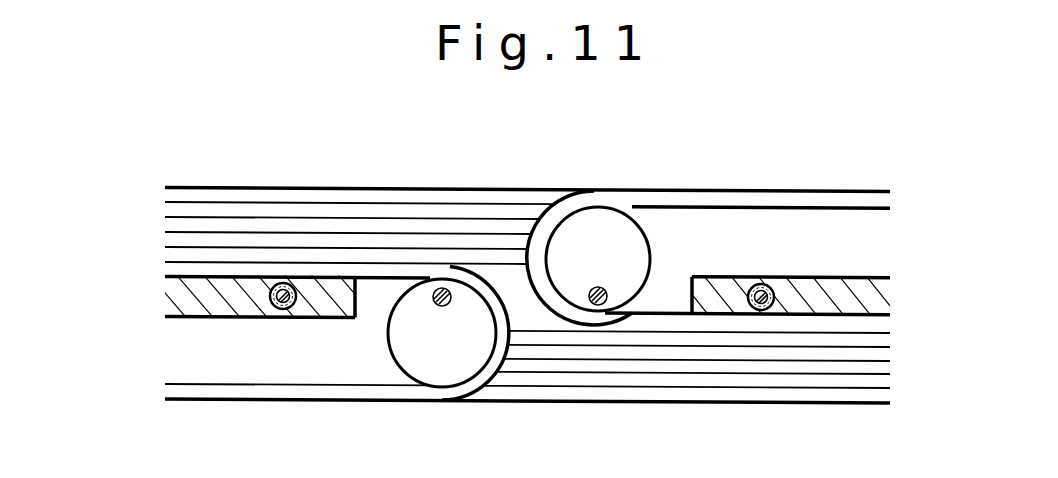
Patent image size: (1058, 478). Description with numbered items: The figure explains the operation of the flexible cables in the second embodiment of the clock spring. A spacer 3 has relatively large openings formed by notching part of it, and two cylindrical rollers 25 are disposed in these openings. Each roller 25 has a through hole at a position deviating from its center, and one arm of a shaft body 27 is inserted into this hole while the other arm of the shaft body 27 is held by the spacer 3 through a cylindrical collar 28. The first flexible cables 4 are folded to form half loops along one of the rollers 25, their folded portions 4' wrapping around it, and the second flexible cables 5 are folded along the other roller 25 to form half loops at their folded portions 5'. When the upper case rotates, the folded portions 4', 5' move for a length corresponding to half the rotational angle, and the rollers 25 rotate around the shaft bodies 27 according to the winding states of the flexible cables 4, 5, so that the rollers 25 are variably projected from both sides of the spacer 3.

The spacer 3 is at (197, 303).
The first flexible cables 4 is at (527, 301).
The folded portions of the first flexible cables 4' is at (579, 227).
The second flexible cables 5 is at (527, 293).
The folded portions of the second flexible cables 5' is at (483, 360).
The cylindrical rollers 25 is at (617, 243).
The shaft body 27 is at (286, 284).
The cylindrical collar 28 is at (760, 284).